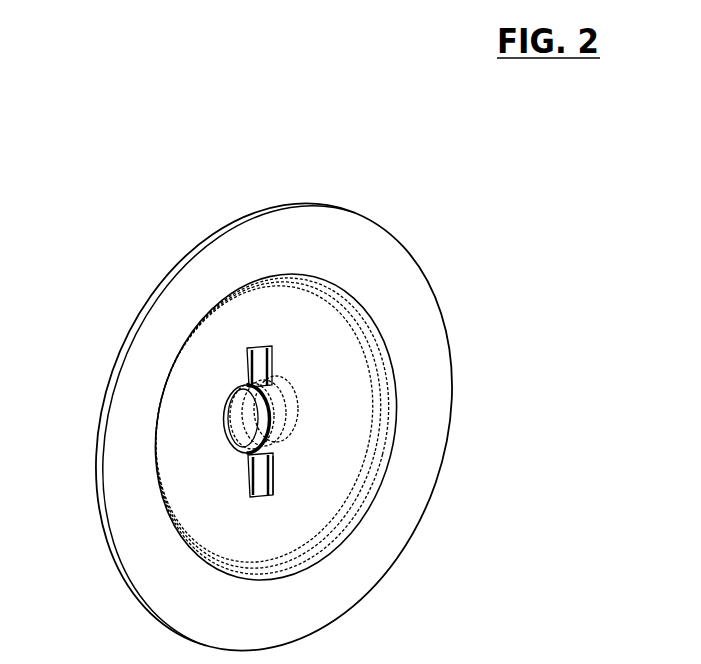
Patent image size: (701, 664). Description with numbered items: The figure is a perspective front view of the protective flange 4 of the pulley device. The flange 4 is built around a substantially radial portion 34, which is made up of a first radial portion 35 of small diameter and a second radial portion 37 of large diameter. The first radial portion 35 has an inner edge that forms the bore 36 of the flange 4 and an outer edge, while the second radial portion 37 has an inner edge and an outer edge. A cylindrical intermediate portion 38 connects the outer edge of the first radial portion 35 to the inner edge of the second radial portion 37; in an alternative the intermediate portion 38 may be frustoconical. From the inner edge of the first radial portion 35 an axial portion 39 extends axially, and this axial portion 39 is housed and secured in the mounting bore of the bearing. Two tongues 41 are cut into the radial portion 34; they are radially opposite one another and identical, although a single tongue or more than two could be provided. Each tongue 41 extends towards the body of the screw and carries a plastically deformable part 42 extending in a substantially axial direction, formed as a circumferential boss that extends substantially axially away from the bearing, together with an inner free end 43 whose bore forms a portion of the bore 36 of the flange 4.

The protective flange 4 is at (158, 250).
The substantially radial portion 34 is at (548, 283).
The first radial portion 35 is at (348, 423).
The bore 36 is at (235, 386).
The second radial portion 37 is at (423, 343).
The cylindrical intermediate portion 38 is at (380, 390).
The axial portion 39 is at (270, 434).
The tongues 41 is at (250, 486).
The plastically deformable part 42 is at (273, 493).
The inner free end 43 is at (290, 393).